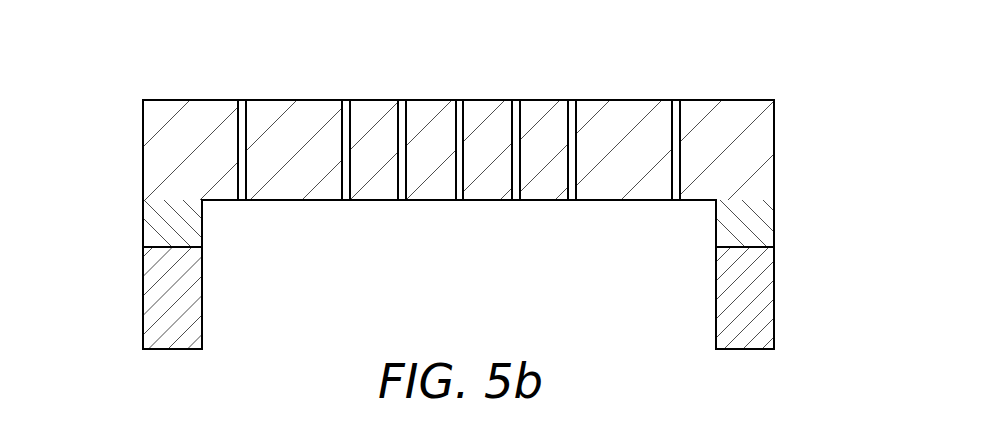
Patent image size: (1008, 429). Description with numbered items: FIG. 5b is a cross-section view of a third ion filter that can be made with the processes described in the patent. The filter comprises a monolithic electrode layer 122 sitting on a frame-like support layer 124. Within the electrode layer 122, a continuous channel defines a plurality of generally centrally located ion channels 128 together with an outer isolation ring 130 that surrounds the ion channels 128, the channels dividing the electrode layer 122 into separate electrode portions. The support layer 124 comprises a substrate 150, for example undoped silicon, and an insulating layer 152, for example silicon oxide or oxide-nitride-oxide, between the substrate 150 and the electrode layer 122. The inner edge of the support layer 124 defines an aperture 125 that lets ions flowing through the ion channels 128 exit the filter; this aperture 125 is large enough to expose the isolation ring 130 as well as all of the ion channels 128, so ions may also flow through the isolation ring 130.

The electrode layer 122 is at (803, 120).
The support layer 124 is at (116, 337).
The aperture 125 is at (610, 309).
The ion channels 128 is at (348, 103).
The isolation ring 130 is at (242, 200).
The substrate 150 is at (152, 300).
The insulating layer 152 is at (152, 224).